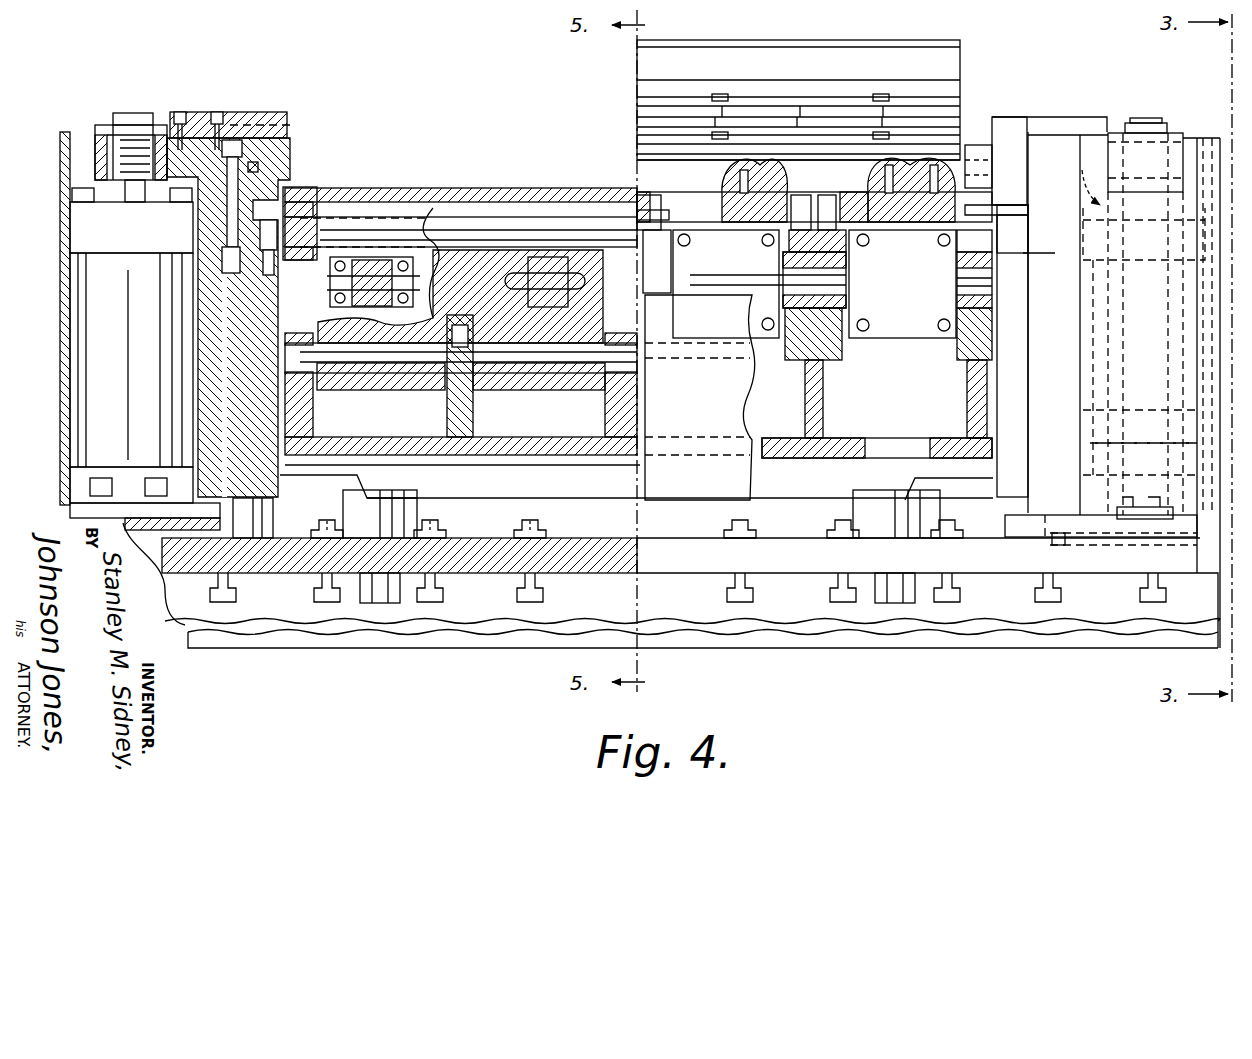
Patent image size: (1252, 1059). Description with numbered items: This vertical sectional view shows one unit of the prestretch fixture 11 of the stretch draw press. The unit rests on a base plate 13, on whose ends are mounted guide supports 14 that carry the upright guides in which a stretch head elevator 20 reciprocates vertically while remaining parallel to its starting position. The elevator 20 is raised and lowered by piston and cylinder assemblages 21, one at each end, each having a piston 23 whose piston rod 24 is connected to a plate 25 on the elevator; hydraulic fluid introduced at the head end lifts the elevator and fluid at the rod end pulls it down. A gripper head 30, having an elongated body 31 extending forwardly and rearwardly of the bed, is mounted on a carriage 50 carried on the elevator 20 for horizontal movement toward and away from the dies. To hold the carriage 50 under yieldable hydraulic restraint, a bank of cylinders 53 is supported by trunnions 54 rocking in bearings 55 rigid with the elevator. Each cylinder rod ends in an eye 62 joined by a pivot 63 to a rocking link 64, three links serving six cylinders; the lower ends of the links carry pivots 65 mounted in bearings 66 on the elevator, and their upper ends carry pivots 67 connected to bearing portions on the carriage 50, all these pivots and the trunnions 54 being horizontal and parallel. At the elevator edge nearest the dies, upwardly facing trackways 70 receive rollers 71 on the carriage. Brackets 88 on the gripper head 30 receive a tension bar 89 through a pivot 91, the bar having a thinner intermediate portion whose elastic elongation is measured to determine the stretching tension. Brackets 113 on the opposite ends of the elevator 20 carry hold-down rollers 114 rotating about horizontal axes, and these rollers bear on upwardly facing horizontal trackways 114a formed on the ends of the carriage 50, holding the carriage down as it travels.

The prestretch fixture 11 is at (1025, 98).
The base plate 13 is at (462, 565).
The guide supports 14 is at (282, 520).
The stretch head elevator 20 is at (245, 313).
The piston and cylinder assemblages 21 is at (107, 418).
The piston 23 is at (1118, 445).
The piston rod 24 is at (140, 113).
The plate 25 is at (96, 162).
The gripper head 30 is at (805, 58).
The elongated body 31 is at (798, 108).
The carriage 50 is at (682, 190).
The cylinders 53 is at (814, 284).
The trunnions 54 is at (760, 280).
The bearings 55 is at (650, 285).
The eye 62 is at (375, 265).
The pivot 63 is at (365, 270).
The rocking link 64 is at (410, 375).
The pivots 65 is at (510, 357).
The bearings 66 is at (313, 412).
The pivots 67 is at (465, 230).
The trackways 70 is at (760, 240).
The rollers 71 is at (650, 198).
The brackets 88 is at (975, 293).
The tension bar 89 is at (912, 193).
The pivot 91 is at (992, 232).
The brackets 113 is at (265, 112).
The hold-down rollers 114 is at (977, 150).
The trackways 114a is at (1000, 208).